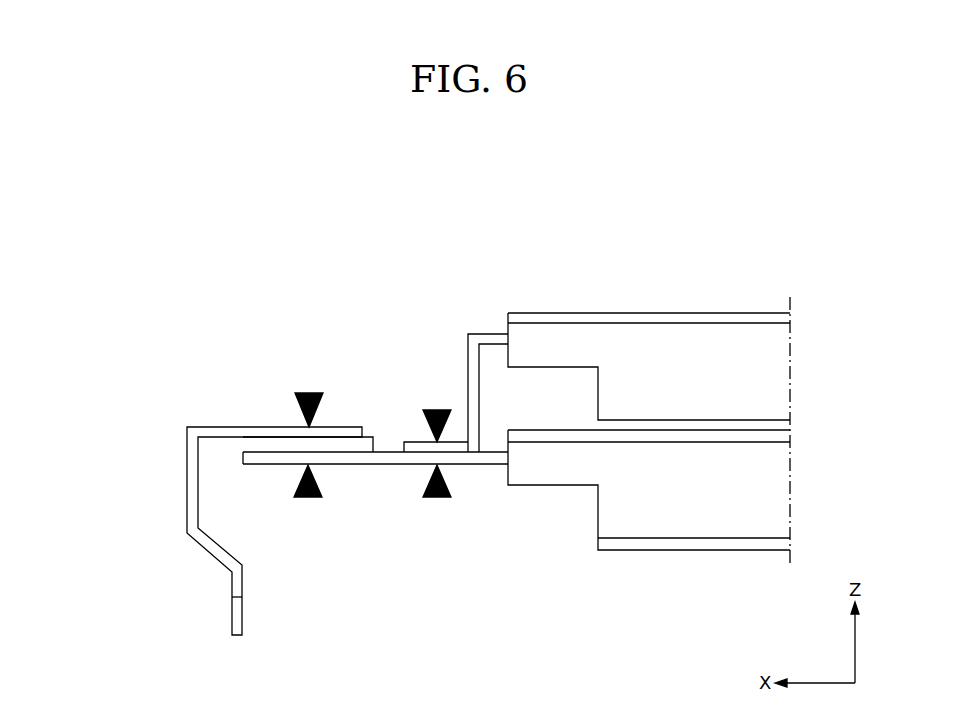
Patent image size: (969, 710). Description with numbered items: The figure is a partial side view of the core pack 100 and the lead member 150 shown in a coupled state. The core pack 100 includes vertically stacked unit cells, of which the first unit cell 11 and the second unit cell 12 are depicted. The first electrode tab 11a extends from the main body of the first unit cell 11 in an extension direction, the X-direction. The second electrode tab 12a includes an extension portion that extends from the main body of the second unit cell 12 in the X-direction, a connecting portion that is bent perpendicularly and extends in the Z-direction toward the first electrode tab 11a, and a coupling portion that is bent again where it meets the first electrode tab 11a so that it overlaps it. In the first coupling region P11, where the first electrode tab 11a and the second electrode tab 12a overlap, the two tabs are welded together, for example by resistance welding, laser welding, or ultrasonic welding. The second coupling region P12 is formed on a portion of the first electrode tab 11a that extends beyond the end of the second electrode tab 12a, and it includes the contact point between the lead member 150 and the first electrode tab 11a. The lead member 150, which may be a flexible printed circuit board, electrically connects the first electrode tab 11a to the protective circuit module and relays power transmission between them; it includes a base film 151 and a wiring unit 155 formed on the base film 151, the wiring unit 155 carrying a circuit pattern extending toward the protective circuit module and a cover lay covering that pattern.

The core pack 100 is at (778, 281).
The second unit cell 12 is at (710, 332).
The second electrode tab 12a is at (468, 352).
The first unit cell 11 is at (678, 518).
The first electrode tab 11a is at (477, 460).
The lead member 150 is at (242, 326).
The wiring unit 155 is at (208, 433).
The base film 151 is at (263, 440).
The second coupling region P12 is at (313, 427).
The first coupling region P11 is at (432, 467).